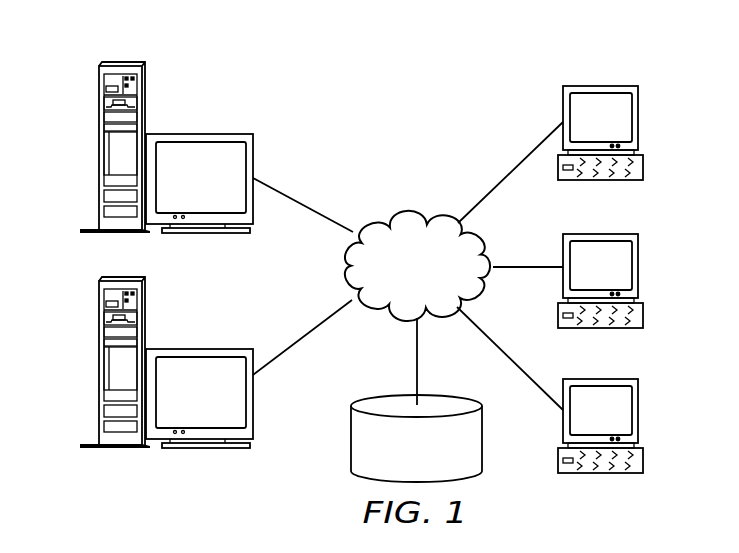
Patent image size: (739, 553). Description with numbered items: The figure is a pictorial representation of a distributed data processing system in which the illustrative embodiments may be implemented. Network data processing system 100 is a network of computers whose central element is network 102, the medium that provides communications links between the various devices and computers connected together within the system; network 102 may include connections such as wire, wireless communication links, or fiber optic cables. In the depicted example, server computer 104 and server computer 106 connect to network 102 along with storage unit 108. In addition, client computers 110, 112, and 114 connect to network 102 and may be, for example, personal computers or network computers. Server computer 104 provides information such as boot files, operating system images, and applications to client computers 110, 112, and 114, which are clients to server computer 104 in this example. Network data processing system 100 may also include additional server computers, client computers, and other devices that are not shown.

The network data processing system 100 is at (471, 72).
The network 102 is at (388, 214).
The server computer 104 is at (99, 150).
The server computer 106 is at (99, 365).
The storage unit 108 is at (350, 450).
The client computer 110 is at (640, 119).
The client computer 112 is at (640, 267).
The client computer 114 is at (638, 412).